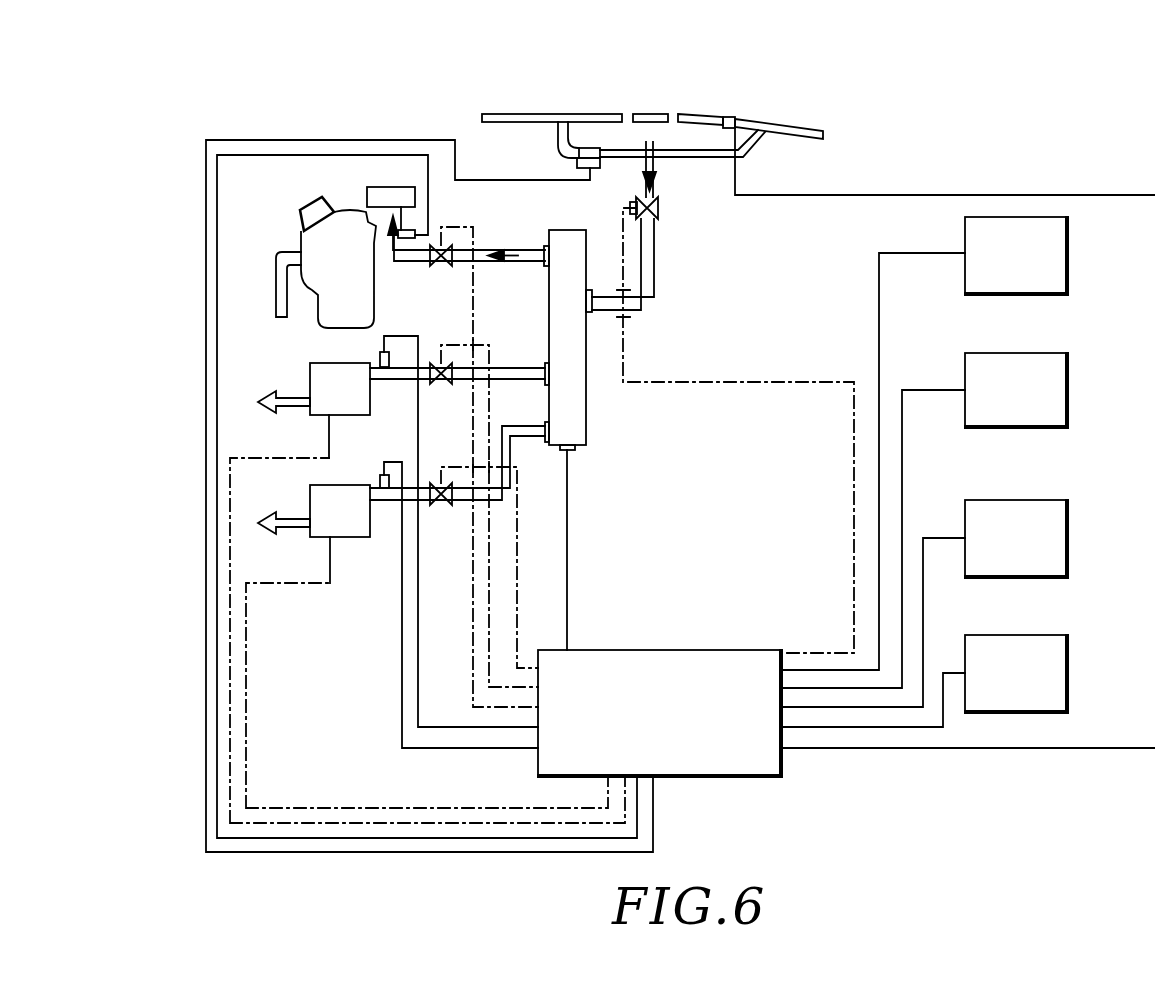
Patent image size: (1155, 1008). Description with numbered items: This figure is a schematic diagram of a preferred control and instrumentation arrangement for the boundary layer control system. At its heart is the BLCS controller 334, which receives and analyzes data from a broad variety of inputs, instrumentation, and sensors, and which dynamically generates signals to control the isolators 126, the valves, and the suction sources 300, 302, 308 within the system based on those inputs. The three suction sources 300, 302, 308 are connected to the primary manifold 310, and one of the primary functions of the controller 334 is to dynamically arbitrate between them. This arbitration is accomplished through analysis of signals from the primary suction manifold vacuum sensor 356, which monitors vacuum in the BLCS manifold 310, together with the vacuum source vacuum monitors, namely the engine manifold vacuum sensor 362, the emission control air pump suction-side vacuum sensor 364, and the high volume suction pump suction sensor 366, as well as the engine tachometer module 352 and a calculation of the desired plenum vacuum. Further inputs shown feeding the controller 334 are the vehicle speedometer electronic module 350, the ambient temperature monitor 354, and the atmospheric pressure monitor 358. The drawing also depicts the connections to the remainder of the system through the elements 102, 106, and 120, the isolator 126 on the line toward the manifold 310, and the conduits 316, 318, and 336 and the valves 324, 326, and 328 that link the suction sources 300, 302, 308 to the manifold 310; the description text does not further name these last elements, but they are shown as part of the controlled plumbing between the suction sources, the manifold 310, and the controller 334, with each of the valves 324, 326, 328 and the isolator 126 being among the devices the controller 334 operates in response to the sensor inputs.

The spray bar assembly 102 is at (796, 118).
The nozzle clamp 106 is at (727, 117).
The supply hose 120 is at (757, 147).
The isolator 126 is at (658, 213).
The suction source 300 is at (319, 540).
The suction source 302 is at (311, 255).
The suction source 308 is at (319, 417).
The BLCS manifold 310 is at (586, 390).
The second conduit 316 is at (546, 385).
The first conduit 318 is at (549, 305).
The first pump valve 324 is at (441, 507).
The second pump valve 326 is at (441, 385).
The reservoir valve 328 is at (440, 266).
The BLCS controller 334 is at (782, 763).
The manifold outlet conduit 336 is at (653, 278).
The vehicle speedometer electronic module 350 is at (1068, 253).
The engine tachometer module 352 is at (1068, 390).
The ambient temperature monitor 354 is at (1068, 538).
The manifold vacuum sensor 356 is at (567, 452).
The atmospheric pressure monitor 358 is at (1068, 673).
The engine manifold vacuum sensor 362 is at (410, 240).
The emission control air pump suction-side vacuum sensor 364 is at (381, 484).
The high volume suction pump suction sensor 366 is at (381, 355).